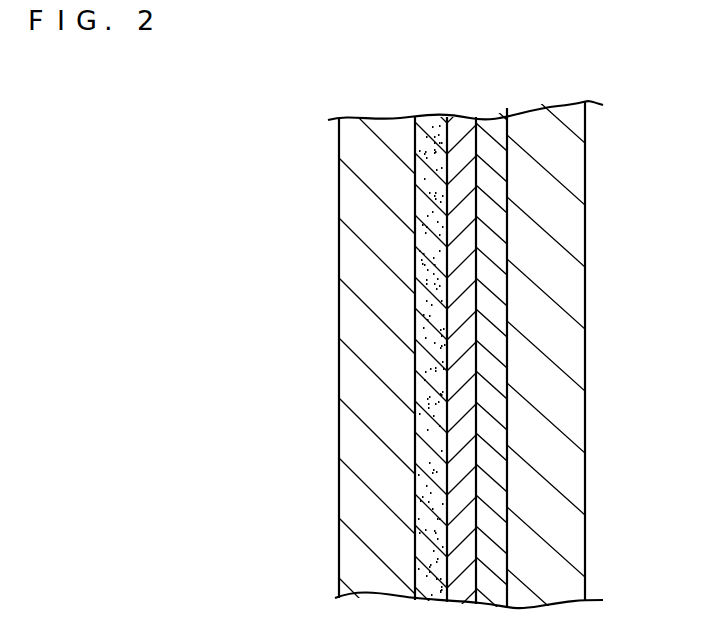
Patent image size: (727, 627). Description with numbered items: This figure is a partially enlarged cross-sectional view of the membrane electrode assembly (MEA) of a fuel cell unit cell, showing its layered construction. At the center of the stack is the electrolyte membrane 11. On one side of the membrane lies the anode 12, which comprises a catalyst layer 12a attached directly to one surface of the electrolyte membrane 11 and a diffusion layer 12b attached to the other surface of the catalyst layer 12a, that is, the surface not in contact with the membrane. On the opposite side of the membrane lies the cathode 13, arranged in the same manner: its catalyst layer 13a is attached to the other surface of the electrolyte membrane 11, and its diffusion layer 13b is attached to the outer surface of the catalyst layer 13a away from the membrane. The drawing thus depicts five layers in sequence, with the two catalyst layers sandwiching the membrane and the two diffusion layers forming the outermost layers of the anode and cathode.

The electrolyte membrane 11 is at (462, 120).
The anode 12 is at (315, 359).
The catalyst layer 12a is at (426, 390).
The diffusion layer 12b is at (377, 469).
The cathode 13 is at (611, 350).
The catalyst layer 13a is at (500, 380).
The diffusion layer 13b is at (547, 443).